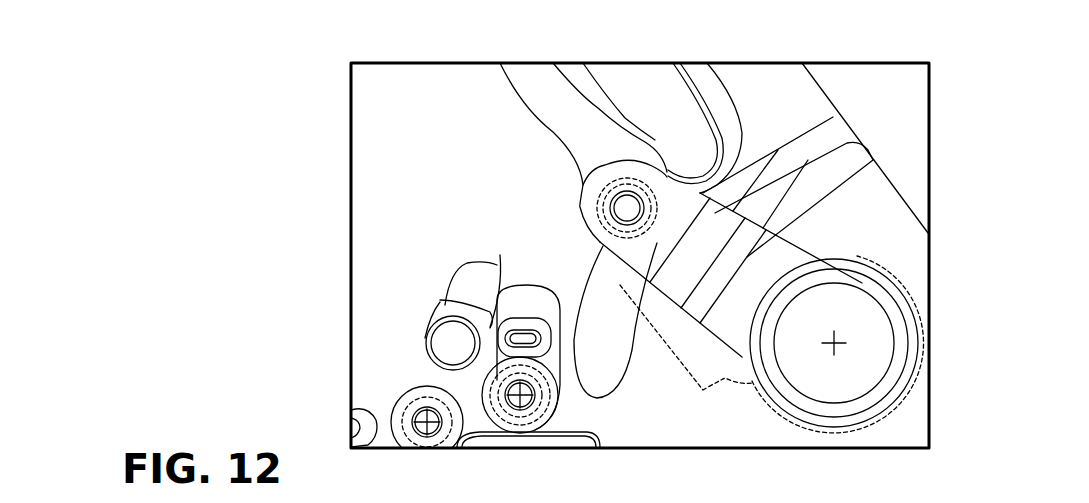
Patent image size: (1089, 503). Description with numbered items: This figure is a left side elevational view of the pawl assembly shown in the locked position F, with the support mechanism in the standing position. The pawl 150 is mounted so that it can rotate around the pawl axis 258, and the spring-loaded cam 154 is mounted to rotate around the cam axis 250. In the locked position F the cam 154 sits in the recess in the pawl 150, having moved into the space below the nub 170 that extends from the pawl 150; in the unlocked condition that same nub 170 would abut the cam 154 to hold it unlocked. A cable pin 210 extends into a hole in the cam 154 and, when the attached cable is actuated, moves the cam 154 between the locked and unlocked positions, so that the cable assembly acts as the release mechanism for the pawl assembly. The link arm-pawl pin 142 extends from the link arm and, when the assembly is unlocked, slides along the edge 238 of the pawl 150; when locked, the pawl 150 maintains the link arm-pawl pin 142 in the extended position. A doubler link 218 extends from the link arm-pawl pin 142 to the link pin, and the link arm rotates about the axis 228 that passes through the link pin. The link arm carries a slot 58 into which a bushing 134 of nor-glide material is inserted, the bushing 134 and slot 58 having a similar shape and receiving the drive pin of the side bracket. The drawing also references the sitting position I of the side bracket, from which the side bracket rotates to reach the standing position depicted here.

The pawl 150 is at (547, 202).
The bushing 134 is at (598, 108).
The slot 58 is at (683, 122).
The link arm-pawl pin 142 is at (627, 208).
The doubler link 218 is at (778, 258).
The axis 228 is at (836, 342).
The edge 238 is at (500, 258).
The nub 170 is at (467, 282).
The cam 154 is at (452, 307).
The cable pin 210 is at (443, 338).
The pawl axis 258 is at (520, 395).
The cam axis 250 is at (427, 421).
The locked position F is at (487, 147).
The sitting position I is at (973, 373).